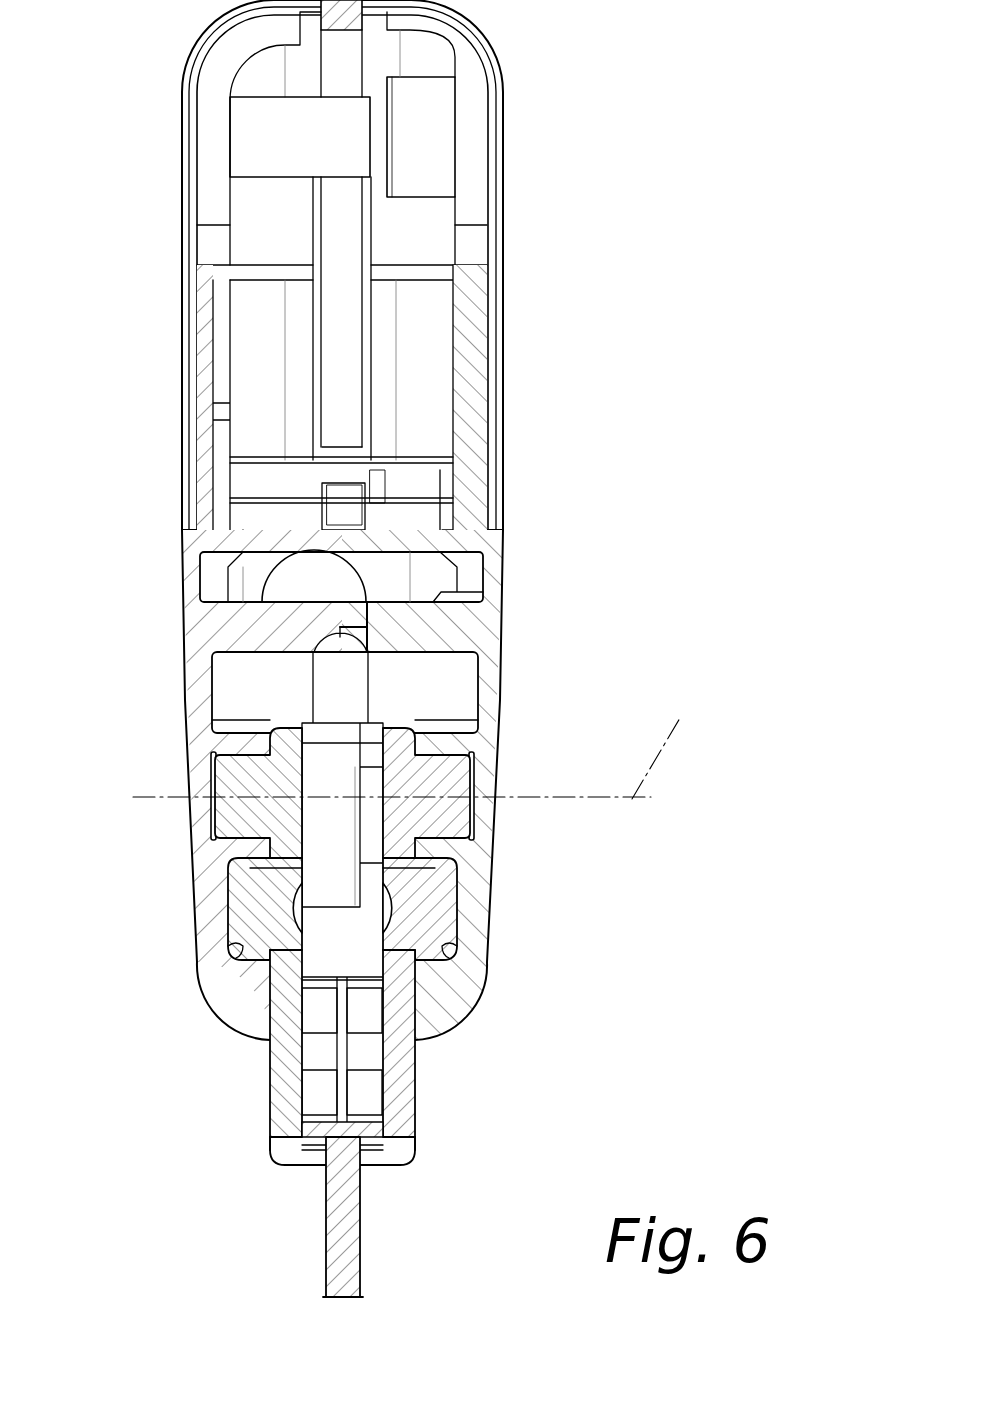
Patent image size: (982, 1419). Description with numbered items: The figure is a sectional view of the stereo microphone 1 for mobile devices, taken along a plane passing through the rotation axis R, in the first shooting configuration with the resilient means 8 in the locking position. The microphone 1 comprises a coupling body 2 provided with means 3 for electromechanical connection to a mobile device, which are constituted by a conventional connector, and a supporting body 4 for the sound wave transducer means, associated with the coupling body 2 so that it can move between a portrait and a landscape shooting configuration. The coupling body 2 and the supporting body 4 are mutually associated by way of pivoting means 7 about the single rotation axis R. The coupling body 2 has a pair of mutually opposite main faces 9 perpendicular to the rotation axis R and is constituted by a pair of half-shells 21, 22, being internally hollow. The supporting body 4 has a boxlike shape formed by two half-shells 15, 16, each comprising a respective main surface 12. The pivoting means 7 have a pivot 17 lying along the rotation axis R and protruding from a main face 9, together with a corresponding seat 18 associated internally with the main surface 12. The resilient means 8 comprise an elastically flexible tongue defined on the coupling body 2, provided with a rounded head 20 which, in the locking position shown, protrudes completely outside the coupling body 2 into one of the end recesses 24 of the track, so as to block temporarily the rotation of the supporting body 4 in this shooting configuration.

The stereo microphone 1 is at (690, 603).
The coupling body 2 is at (369, 1057).
The means for electromechanical connection 3 is at (343, 1233).
The supporting body 4 is at (512, 398).
The pivoting means 7 is at (208, 780).
The resilient means 8 is at (224, 928).
The main faces 9 is at (268, 1073).
The main surfaces 12 is at (183, 640).
The half-shell 15 is at (180, 538).
The half-shell 16 is at (505, 541).
The pivot 17 is at (232, 834).
The seat 18 is at (209, 773).
The rounded head 20 is at (270, 907).
The half-shell 21 is at (264, 1140).
The half-shell 22 is at (419, 1140).
The end recesses 24 is at (240, 962).
The rotation axis R is at (415, 741).